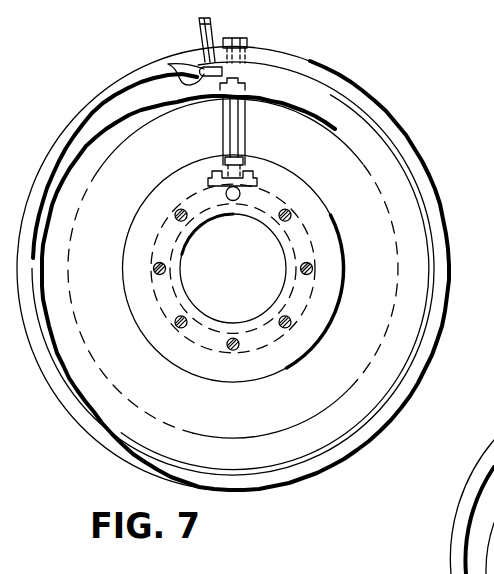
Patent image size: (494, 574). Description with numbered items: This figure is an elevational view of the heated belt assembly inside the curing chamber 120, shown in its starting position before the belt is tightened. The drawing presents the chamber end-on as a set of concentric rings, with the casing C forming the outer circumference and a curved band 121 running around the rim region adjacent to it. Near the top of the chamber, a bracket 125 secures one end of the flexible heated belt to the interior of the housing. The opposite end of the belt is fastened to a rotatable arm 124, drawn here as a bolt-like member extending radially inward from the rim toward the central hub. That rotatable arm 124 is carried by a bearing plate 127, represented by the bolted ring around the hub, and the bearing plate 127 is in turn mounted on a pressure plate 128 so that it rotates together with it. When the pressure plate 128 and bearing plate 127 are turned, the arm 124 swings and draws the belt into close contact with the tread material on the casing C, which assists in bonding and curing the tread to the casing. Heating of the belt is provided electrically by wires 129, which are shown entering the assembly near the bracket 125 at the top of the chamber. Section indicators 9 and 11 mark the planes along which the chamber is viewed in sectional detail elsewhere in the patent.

The curing chamber 120 is at (100, 454).
The band 121 is at (120, 123).
The rotatable arm 124 is at (224, 129).
The bracket 125 is at (168, 64).
The bearing plate 127 is at (300, 322).
The pressure plate 128 is at (292, 366).
The wires 129 is at (201, 34).
The section line 9 is at (232, 35).
The section line 11 is at (308, 103).
The casing C is at (395, 352).